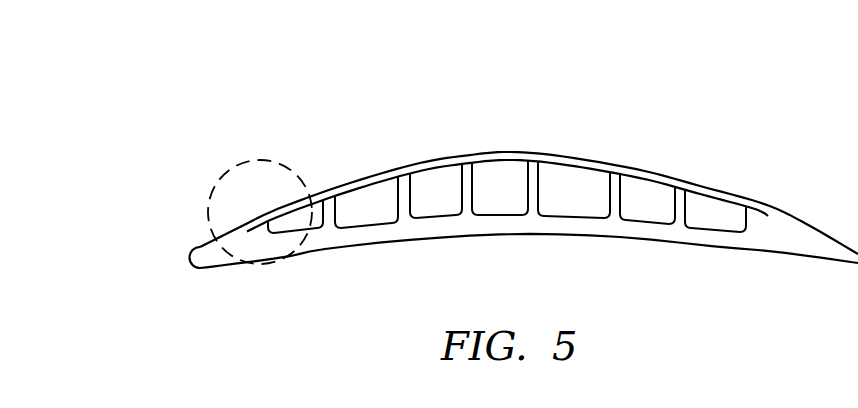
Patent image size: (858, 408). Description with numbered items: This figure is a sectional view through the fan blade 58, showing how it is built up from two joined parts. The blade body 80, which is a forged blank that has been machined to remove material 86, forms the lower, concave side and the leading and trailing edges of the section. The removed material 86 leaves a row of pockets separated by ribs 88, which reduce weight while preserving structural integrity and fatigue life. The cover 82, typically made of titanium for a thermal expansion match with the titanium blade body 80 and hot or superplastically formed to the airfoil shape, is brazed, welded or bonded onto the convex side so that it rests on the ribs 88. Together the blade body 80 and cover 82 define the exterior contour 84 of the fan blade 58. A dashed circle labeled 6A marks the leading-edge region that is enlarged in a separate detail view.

The fan blade 58 is at (524, 180).
The blade body 80 is at (721, 238).
The cover 82 is at (697, 192).
The exterior contour 84 is at (613, 154).
The material 86 is at (303, 207).
The ribs 88 is at (537, 177).
The detail view region 6A is at (255, 268).